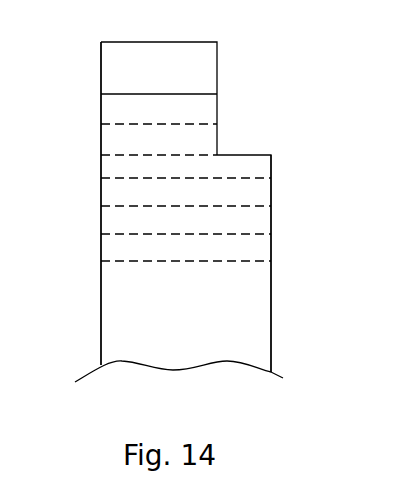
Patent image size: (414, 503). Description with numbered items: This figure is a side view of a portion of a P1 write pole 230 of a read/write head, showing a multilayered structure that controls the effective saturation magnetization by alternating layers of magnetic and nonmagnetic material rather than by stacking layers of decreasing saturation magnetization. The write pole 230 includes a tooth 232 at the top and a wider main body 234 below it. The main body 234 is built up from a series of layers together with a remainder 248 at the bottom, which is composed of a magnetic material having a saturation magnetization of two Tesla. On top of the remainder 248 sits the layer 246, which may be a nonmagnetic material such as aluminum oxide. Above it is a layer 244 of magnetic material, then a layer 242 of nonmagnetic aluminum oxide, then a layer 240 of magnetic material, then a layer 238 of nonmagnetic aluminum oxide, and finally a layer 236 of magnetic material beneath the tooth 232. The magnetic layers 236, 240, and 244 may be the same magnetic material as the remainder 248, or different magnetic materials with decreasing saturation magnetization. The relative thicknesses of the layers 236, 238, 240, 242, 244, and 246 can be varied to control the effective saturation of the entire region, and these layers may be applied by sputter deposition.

The write pole 230 is at (86, 174).
The tooth 232 is at (193, 72).
The main body 234 is at (285, 309).
The layer 236 is at (202, 108).
The layer 238 is at (200, 143).
The layer 240 is at (258, 165).
The layer 242 is at (245, 193).
The layer 244 is at (245, 223).
The layer 246 is at (245, 247).
The remainder 248 is at (253, 340).